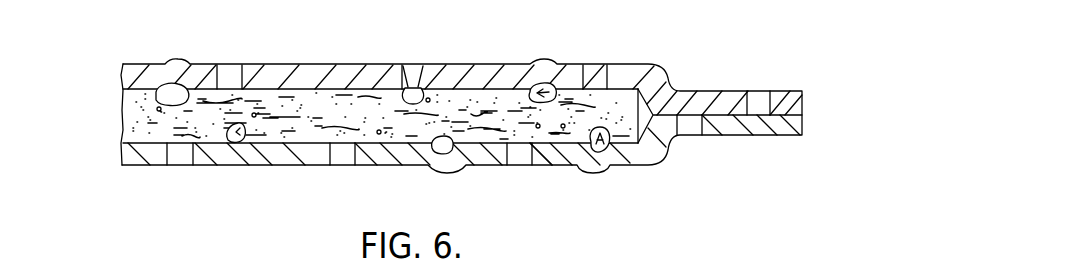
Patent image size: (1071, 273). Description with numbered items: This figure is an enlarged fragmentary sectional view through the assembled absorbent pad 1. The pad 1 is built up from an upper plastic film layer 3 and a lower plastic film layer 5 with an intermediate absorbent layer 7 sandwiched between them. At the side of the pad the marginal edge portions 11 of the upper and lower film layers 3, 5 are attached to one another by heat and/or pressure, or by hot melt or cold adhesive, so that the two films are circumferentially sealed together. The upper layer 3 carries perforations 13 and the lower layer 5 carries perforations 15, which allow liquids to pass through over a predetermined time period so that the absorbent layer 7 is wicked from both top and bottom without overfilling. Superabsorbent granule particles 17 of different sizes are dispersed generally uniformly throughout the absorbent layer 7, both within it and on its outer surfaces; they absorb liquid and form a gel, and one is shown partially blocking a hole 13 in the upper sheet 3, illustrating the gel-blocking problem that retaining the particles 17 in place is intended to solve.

The absorbent pad 1 is at (346, 200).
The upper plastic film layer 3 is at (128, 60).
The lower plastic film layer 5 is at (156, 167).
The intermediate absorbent layer 7 is at (126, 112).
The marginal edge portions 11 is at (816, 109).
The perforations 13 is at (411, 67).
The perforations 15 is at (531, 145).
The superabsorbent granule particles 17 is at (290, 105).